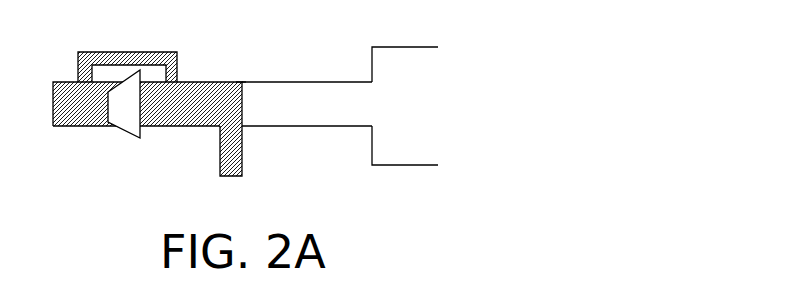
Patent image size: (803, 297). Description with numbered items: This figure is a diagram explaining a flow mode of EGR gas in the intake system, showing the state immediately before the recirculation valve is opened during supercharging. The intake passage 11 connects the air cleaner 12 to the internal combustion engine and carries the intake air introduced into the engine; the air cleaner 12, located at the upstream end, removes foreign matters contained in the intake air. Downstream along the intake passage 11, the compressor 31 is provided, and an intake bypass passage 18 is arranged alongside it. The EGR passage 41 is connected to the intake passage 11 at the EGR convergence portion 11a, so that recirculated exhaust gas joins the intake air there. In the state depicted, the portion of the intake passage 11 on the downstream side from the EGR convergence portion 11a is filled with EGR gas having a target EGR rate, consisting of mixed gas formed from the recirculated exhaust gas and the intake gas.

The intake passage 11 is at (311, 82).
The EGR convergence portion 11a is at (250, 63).
The air cleaner 12 is at (407, 47).
The intake bypass passage 18 is at (97, 51).
The compressor 31 is at (123, 110).
The EGR passage 41 is at (242, 150).